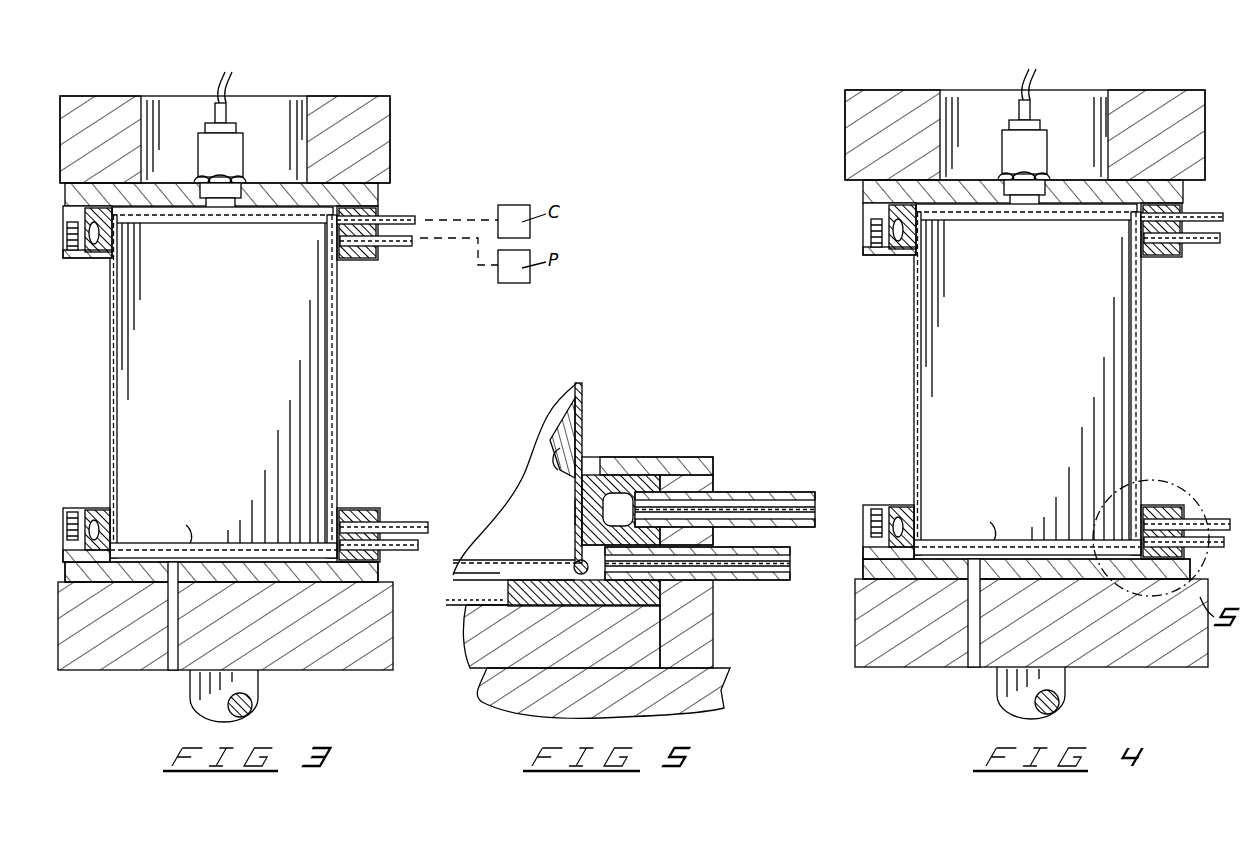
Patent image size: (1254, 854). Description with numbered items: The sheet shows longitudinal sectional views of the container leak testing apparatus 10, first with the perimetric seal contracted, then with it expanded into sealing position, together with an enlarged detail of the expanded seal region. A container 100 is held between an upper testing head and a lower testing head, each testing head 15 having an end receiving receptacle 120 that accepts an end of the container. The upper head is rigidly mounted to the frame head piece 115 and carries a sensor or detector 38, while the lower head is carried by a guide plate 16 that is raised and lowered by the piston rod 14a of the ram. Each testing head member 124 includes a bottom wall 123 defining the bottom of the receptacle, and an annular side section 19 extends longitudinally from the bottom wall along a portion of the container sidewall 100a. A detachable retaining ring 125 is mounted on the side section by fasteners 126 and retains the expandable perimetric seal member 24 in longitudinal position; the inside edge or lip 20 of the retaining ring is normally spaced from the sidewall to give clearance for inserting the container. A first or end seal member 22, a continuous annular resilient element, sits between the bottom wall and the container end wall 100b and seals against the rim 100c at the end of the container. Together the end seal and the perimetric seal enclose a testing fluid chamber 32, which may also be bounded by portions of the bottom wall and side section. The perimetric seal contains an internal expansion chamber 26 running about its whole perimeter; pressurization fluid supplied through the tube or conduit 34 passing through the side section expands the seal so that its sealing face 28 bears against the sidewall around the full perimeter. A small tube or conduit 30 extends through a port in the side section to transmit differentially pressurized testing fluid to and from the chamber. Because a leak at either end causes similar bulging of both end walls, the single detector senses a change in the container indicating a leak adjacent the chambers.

In FIG. 3, the testing apparatus 10 is at (225, 121).
In FIG. 4, the testing apparatus 10 is at (1025, 117).
In FIG. 3, the frame head piece 115 is at (103, 104).
In FIG. 4, the frame head piece 115 is at (896, 118).
In FIG. 3, the sensor or detector 38 is at (232, 148).
In FIG. 4, the sensor or detector 38 is at (1039, 138).
In FIG. 3, the testing head member 124 is at (372, 200).
In FIG. 4, the testing head member 124 is at (995, 379).
In FIG. 5, the testing head member 124 is at (708, 616).
In FIG. 3, the first or end seal member 22 is at (137, 574).
In FIG. 4, the first or end seal member 22 is at (1026, 569).
In FIG. 5, the first or end seal member 22 is at (568, 606).
In FIG. 3, the bottom wall 123 is at (215, 568).
In FIG. 3, the guide plate 16 is at (358, 656).
In FIG. 4, the guide plate 16 is at (1031, 638).
In FIG. 5, the guide plate 16 is at (708, 690).
In FIG. 3, the piston rod 14a is at (248, 676).
In FIG. 4, the piston rod 14a is at (1055, 693).
In FIG. 3, the container 100 is at (250, 382).
In FIG. 4, the container 100 is at (1000, 379).
In FIG. 3, the container sidewall 100a is at (118, 448).
In FIG. 4, the container sidewall 100a is at (1027, 379).
In FIG. 5, the container sidewall 100a is at (584, 386).
In FIG. 3, the container end wall 100b is at (223, 531).
In FIG. 4, the container end wall 100b is at (1027, 532).
In FIG. 5, the container end wall 100b is at (510, 582).
In FIG. 5, the rim 100c is at (570, 562).
In FIG. 3, the annular side section 19 is at (64, 520).
In FIG. 4, the annular side section 19 is at (864, 381).
In FIG. 5, the annular side section 19 is at (712, 476).
In FIG. 3, the detachable retaining ring 125 is at (94, 258).
In FIG. 4, the detachable retaining ring 125 is at (1035, 382).
In FIG. 5, the detachable retaining ring 125 is at (690, 460).
In FIG. 3, the fastener 126 is at (74, 262).
In FIG. 4, the fastener 126 is at (865, 378).
In FIG. 3, the testing head 15 is at (416, 212).
In FIG. 4, the testing head 15 is at (990, 236).
In FIG. 5, the testing head 15 is at (694, 440).
In FIG. 3, the end receiving receptacle 120 is at (344, 500).
In FIG. 4, the end receiving receptacle 120 is at (1162, 532).
In FIG. 3, the tube or conduit 30 is at (400, 216).
In FIG. 4, the tube or conduit 30 is at (1188, 383).
In FIG. 5, the tube or conduit 30 is at (764, 582).
In FIG. 3, the tube or conduit 34 is at (400, 246).
In FIG. 4, the tube or conduit 34 is at (1187, 381).
In FIG. 5, the tube or conduit 34 is at (800, 490).
In FIG. 5, the perimetric seal member 24 is at (582, 424).
In FIG. 5, the inside edge or lip 20 is at (592, 458).
In FIG. 5, the internal expansion chamber 26 is at (624, 500).
In FIG. 5, the sealing face 28 is at (575, 512).
In FIG. 5, the testing fluid chamber 32 is at (592, 606).